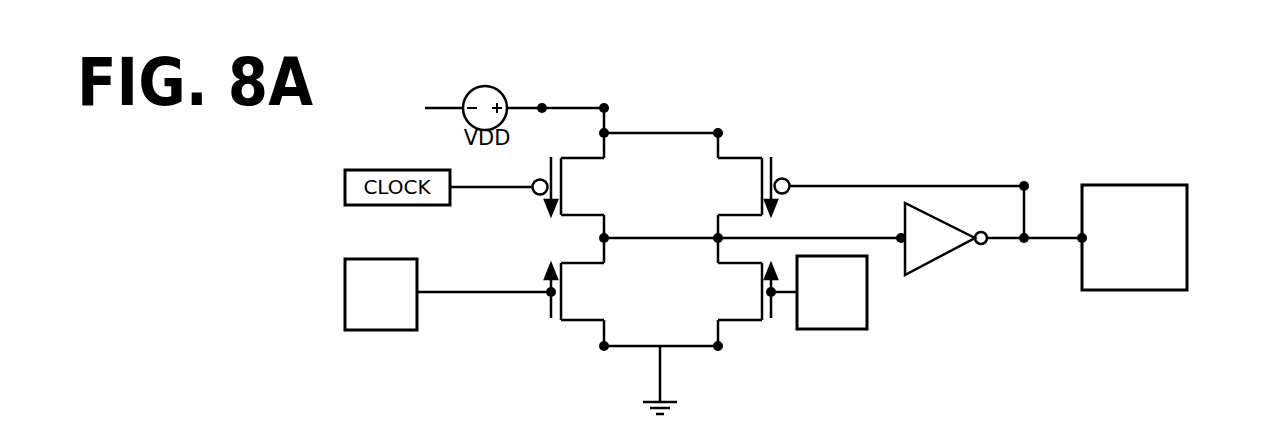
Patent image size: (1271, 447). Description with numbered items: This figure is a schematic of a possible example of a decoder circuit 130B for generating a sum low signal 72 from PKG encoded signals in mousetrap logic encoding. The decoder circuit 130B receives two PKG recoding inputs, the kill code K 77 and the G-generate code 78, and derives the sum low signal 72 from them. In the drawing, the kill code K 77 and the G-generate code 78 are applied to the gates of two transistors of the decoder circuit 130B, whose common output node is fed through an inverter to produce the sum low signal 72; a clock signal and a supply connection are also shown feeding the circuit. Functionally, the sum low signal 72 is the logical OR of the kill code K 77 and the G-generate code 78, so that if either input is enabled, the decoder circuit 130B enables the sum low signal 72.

The decoder circuit 130B is at (838, 132).
The sum low signal 72 is at (1122, 262).
The kill code K 77 is at (818, 317).
The G-generate code 78 is at (367, 318).